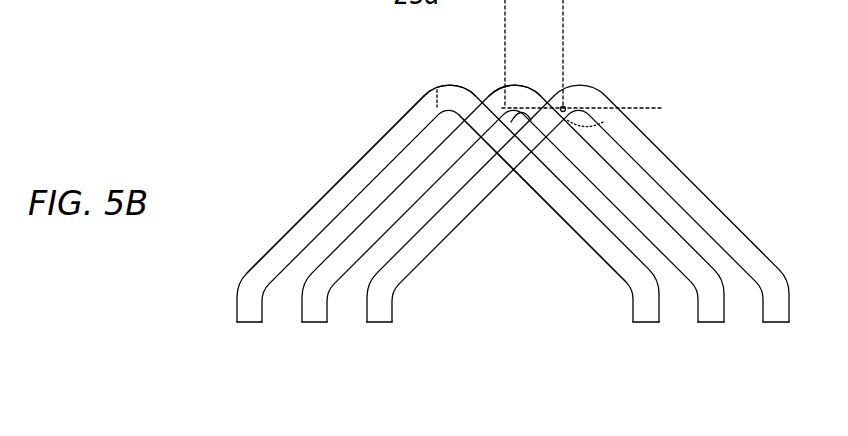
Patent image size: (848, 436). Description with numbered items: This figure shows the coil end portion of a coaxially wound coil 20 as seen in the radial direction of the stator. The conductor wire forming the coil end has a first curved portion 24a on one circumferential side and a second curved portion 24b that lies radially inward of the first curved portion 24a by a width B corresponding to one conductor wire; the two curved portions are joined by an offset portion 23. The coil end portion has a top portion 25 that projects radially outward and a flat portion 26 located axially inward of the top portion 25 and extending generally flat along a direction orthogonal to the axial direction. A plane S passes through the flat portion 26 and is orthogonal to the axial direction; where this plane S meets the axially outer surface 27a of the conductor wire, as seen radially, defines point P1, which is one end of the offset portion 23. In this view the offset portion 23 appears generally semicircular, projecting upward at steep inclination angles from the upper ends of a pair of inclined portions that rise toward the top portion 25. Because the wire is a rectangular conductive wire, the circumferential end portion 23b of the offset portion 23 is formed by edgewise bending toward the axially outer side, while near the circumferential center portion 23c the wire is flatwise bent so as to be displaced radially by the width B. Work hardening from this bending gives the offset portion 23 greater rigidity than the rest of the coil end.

The coaxially wound coil 20 is at (247, 320).
The offset portion 23 is at (443, 84).
The end portion of the offset portion 23b is at (550, 112).
The center portion of the offset portion 23c is at (512, 112).
The first curved portion 24a is at (322, 192).
The second curved portion 24b is at (607, 245).
The top portion 25 is at (513, 84).
The flat portion 26 is at (513, 108).
The surface of the conductor wire on the outer side in the axial direction 27a is at (603, 122).
The point P1 is at (600, 87).
The plane S is at (662, 108).
The width B is at (797, 0).